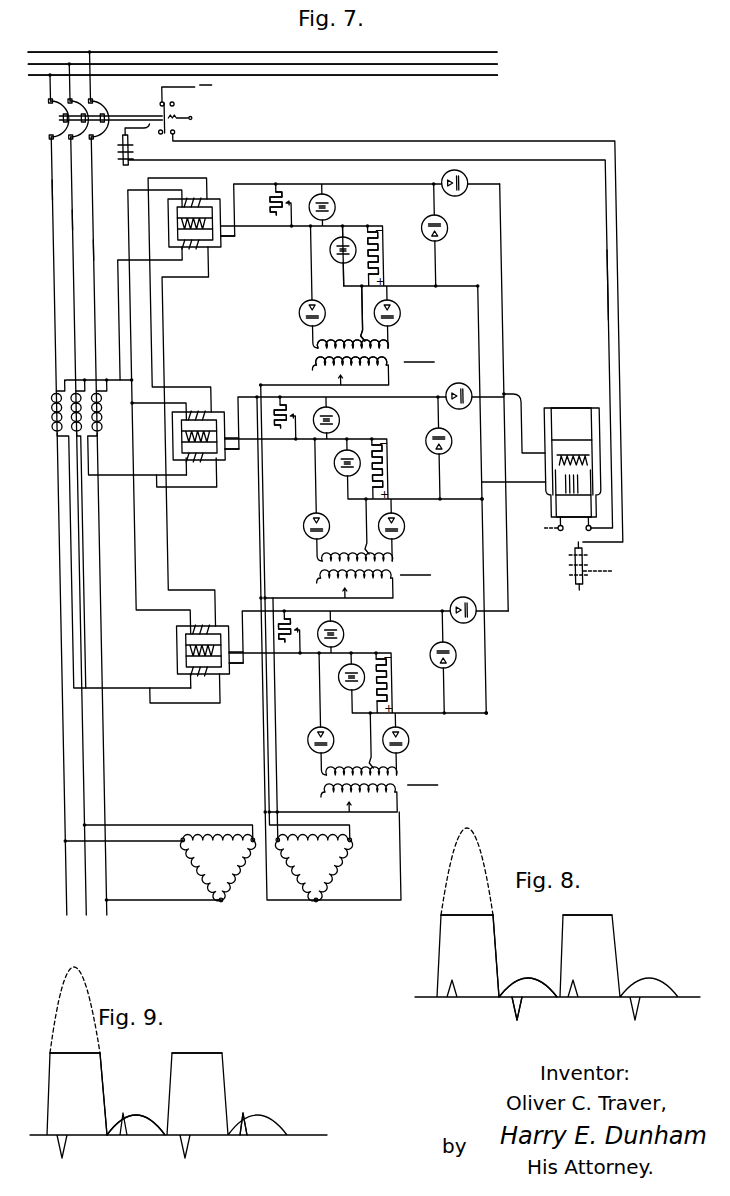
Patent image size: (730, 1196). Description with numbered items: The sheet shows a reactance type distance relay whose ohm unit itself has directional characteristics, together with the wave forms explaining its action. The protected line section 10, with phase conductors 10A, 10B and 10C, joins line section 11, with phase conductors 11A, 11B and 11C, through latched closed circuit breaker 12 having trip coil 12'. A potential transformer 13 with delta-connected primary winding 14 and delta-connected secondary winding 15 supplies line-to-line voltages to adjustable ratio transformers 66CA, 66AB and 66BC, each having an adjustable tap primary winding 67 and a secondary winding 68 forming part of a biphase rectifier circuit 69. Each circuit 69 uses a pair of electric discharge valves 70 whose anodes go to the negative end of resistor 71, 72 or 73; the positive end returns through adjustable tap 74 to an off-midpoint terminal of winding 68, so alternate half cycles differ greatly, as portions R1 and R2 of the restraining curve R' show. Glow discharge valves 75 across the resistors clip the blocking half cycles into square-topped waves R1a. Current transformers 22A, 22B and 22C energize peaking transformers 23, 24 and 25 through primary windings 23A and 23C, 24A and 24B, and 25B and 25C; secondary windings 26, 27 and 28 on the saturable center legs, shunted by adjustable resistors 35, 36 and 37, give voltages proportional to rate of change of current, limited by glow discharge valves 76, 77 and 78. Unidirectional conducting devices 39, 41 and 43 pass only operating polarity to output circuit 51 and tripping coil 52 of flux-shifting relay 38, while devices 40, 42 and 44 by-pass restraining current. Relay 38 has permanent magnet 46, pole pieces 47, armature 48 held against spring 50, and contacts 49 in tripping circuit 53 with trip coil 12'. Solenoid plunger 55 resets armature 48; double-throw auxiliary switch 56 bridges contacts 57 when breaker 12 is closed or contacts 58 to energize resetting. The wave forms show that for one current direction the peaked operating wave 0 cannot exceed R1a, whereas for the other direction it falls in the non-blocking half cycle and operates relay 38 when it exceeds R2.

In FIG. 7, the line section 10 is at (88, 150).
In FIG. 7, the phase conductor 10A is at (47, 193).
In FIG. 7, the phase conductor 10B is at (66, 218).
In FIG. 7, the phase conductor 10C is at (86, 246).
In FIG. 7, the line section 11 is at (113, 70).
In FIG. 7, the phase conductor 11A is at (143, 76).
In FIG. 7, the phase conductor 11B is at (177, 65).
In FIG. 7, the phase conductor 11C is at (216, 53).
In FIG. 7, the circuit breaker 12 is at (97, 119).
In FIG. 7, the trip coil 12' is at (365, 328).
In FIG. 7, the potential transformer 13 is at (234, 825).
In FIG. 7, the delta-connected primary winding 14 is at (218, 869).
In FIG. 7, the delta-connected secondary winding 15 is at (314, 869).
In FIG. 7, the current transformer 22A is at (44, 401).
In FIG. 7, the current transformer 22B is at (60, 434).
In FIG. 7, the current transformer 22C is at (80, 436).
In FIG. 7, the peaking transformer 23 is at (164, 634).
In FIG. 7, the primary winding 23A is at (187, 680).
In FIG. 7, the primary winding 23C is at (205, 624).
In FIG. 7, the peaking transformer 24 is at (185, 400).
In FIG. 7, the primary winding 24A is at (207, 404).
In FIG. 7, the primary winding 24B is at (190, 462).
In FIG. 7, the peaking transformer 25 is at (164, 206).
In FIG. 7, the primary winding 25B is at (206, 199).
In FIG. 7, the primary winding 25C is at (216, 238).
In FIG. 7, the secondary winding 26 is at (216, 664).
In FIG. 7, the secondary winding 27 is at (216, 450).
In FIG. 7, the secondary winding 28 is at (176, 229).
In FIG. 7, the adjustable resistor 35 is at (274, 648).
In FIG. 7, the adjustable resistor 36 is at (270, 432).
In FIG. 7, the adjustable resistor 37 is at (266, 206).
In FIG. 7, the high speed relay 38 is at (571, 396).
In FIG. 7, the unidirectional conducting device 39 is at (450, 596).
In FIG. 7, the unidirectional conducting device 40 is at (440, 662).
In FIG. 7, the unidirectional conducting device 41 is at (449, 385).
In FIG. 7, the unidirectional conducting device 42 is at (422, 432).
In FIG. 7, the unidirectional conducting device 43 is at (459, 191).
In FIG. 7, the unidirectional conducting device 44 is at (441, 236).
In FIG. 7, the permanent magnet 46 is at (571, 424).
In FIG. 7, the pole pieces 47 is at (540, 412).
In FIG. 7, the armature 48 is at (546, 515).
In FIG. 7, the contacts 49 is at (548, 532).
In FIG. 7, the spring 50 is at (546, 500).
In FIG. 7, the output circuit 51 is at (533, 481).
In FIG. 7, the tripping coil 52 is at (579, 461).
In FIG. 7, the tripping circuit 53 is at (600, 284).
In FIG. 7, the solenoid-operated plunger 55 is at (564, 575).
In FIG. 7, the double-throw auxiliary switch 56 is at (160, 112).
In FIG. 7, the contacts 57 is at (158, 103).
In FIG. 7, the contacts 58 is at (172, 104).
In FIG. 7, the adjustable ratio transformer 66BC is at (421, 354).
In FIG. 7, the adjustable ratio transformer 66AB is at (416, 567).
In FIG. 7, the adjustable ratio transformer 66CA is at (423, 777).
In FIG. 7, the adjustable tap primary winding 67 is at (333, 372).
In FIG. 7, the secondary winding 68 is at (343, 346).
In FIG. 7, the biphase rectifier circuit 69 is at (334, 298).
In FIG. 7, the electric discharge valves 70 is at (293, 308).
In FIG. 7, the resistor 71 is at (374, 682).
In FIG. 7, the resistor 72 is at (374, 470).
In FIG. 7, the resistor 73 is at (374, 257).
In FIG. 7, the adjustable tap 74 is at (354, 325).
In FIG. 7, the glow discharge valves 75 is at (329, 258).
In FIG. 7, the glow discharge valve 76 is at (331, 628).
In FIG. 7, the glow discharge valve 77 is at (333, 412).
In FIG. 7, the glow discharge valve 78 is at (330, 205).
In FIG. 8, the restraining voltage portion R1 is at (480, 848).
In FIG. 9, the restraining voltage portion R1 is at (88, 988).
In FIG. 8, the square-topped restraining half cycle R1a is at (455, 915).
In FIG. 9, the square-topped restraining half cycle R1a is at (62, 1053).
In FIG. 8, the restraining voltage curve R' is at (506, 956).
In FIG. 9, the restraining voltage curve R' is at (114, 1094).
In FIG. 8, the restraining voltage portion R2 is at (530, 978).
In FIG. 9, the restraining voltage portion R2 is at (142, 1114).
In FIG. 8, the peaked operating voltage wave 0 is at (520, 1022).
In FIG. 9, the peaked operating voltage wave 0 is at (245, 1115).